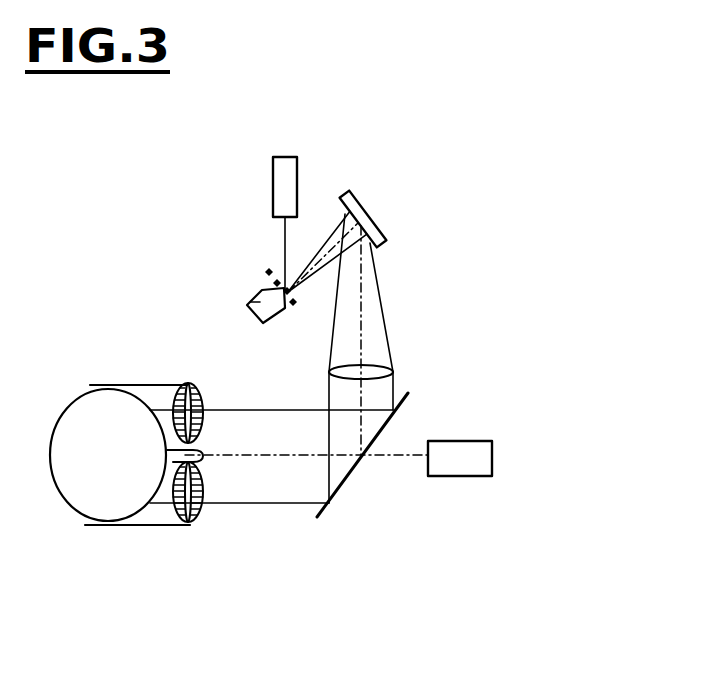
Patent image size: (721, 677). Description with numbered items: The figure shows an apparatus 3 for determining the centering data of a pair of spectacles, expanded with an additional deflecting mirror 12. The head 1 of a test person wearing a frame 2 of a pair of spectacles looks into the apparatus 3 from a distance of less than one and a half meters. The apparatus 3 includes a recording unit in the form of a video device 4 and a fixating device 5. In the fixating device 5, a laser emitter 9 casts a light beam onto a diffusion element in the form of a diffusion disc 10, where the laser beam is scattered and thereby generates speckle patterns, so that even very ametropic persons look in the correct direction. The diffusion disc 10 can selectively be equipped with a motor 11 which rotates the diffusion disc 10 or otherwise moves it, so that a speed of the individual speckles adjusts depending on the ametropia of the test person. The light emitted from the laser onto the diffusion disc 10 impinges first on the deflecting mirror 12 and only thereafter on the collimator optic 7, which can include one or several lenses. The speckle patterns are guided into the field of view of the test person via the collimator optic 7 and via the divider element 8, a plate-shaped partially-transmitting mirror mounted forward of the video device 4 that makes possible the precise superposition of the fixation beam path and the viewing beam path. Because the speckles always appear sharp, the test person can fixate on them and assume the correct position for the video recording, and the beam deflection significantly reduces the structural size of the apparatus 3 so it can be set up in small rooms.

The head 1 is at (80, 346).
The frame 2 is at (188, 524).
The apparatus 3 is at (428, 536).
The video device 4 is at (492, 455).
The fixating device 5 is at (478, 283).
The collimator optic 7 is at (393, 372).
The divider element 8 is at (344, 483).
The laser emitter 9 is at (291, 157).
The diffusion disc 10 is at (268, 270).
The motor 11 is at (248, 300).
The deflecting mirror 12 is at (380, 226).